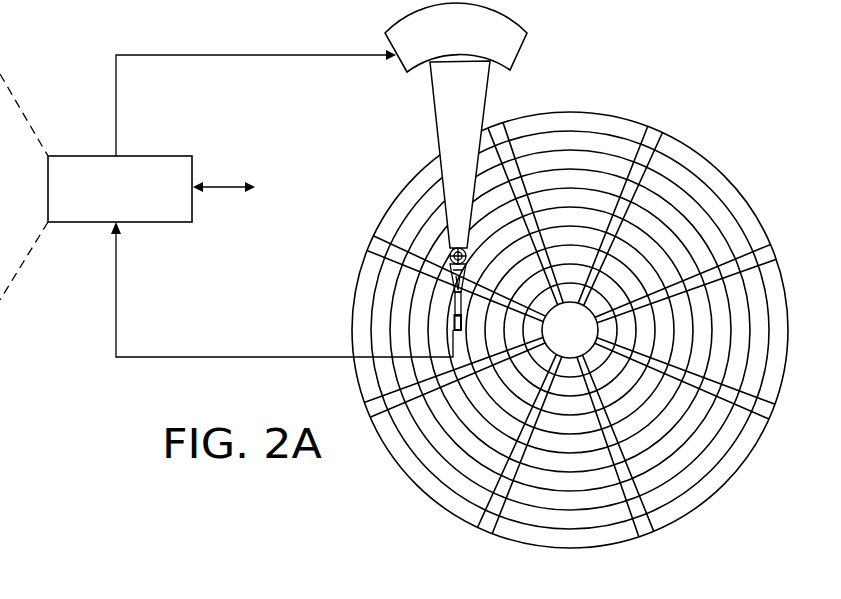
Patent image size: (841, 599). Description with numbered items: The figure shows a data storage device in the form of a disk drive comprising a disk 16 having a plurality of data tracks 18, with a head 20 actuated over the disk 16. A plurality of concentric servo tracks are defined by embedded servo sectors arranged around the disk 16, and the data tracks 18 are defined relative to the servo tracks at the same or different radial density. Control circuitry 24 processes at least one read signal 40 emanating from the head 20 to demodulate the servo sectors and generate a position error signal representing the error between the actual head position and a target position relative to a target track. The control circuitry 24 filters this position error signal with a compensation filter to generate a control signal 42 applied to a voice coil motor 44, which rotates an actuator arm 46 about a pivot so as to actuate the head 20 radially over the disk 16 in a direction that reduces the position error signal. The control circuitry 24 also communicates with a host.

The disk 16 is at (726, 156).
The data tracks 18 is at (573, 137).
The head 20 is at (446, 322).
The control circuitry 24 is at (157, 156).
The read signal 40 is at (218, 357).
The control signal 42 is at (116, 110).
The voice coil motor (VCM) 44 is at (407, 71).
The actuator arm 46 is at (440, 142).